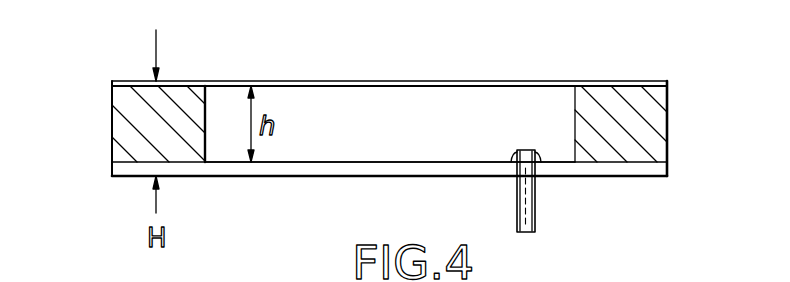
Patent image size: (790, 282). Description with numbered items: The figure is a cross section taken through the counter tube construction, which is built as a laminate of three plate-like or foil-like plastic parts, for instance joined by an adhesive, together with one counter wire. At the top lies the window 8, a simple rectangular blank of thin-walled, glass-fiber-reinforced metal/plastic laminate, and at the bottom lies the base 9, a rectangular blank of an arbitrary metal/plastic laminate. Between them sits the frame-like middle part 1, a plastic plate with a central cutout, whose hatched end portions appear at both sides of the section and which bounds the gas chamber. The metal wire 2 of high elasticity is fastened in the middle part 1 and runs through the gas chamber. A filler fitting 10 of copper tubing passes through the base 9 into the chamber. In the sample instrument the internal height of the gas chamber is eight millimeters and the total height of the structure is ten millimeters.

The frame-like middle part 1 is at (112, 120).
The metal wire 2 is at (392, 127).
The window 8 is at (348, 81).
The base 9 is at (322, 180).
The filler fitting 10 is at (535, 200).